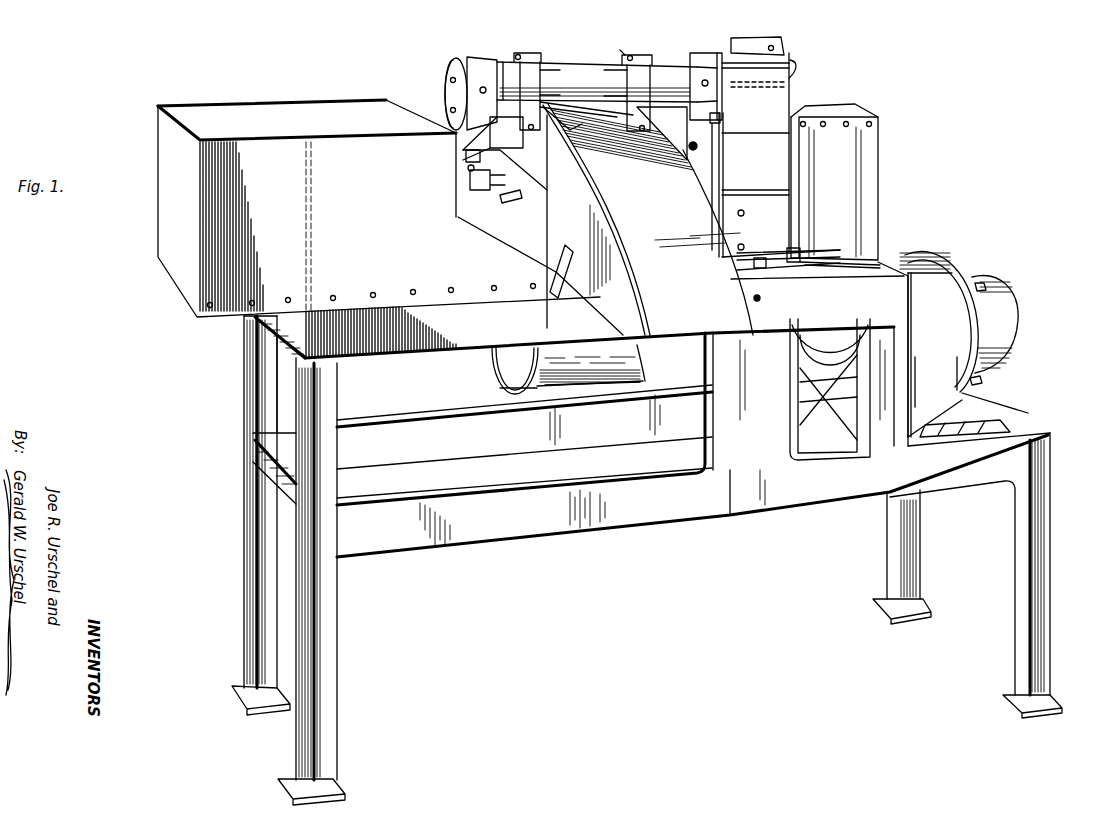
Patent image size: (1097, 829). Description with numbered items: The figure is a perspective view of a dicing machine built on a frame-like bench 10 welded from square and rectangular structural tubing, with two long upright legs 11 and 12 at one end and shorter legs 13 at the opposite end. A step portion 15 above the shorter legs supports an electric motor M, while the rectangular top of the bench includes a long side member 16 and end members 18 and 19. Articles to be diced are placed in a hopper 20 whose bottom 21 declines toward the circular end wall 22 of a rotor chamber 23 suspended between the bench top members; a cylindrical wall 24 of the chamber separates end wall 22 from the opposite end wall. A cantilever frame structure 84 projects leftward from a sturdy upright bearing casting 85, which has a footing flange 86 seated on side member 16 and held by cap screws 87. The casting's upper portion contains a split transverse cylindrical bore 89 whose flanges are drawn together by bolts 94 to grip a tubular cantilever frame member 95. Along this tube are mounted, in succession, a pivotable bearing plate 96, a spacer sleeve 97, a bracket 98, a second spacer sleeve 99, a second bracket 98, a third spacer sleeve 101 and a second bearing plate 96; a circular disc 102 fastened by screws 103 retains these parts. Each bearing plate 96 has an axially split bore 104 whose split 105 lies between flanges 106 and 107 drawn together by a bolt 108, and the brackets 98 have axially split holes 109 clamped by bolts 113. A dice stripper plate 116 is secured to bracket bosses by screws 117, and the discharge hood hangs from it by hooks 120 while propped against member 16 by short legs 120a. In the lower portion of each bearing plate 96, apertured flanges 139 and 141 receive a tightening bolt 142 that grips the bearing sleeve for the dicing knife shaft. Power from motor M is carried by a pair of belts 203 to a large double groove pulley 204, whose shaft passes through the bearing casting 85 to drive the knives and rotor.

The frame-like bench 10 is at (639, 540).
The long upright leg 11 is at (245, 587).
The long upright leg 12 is at (298, 740).
The shorter leg 13 is at (1042, 617).
The step portion 15 is at (1005, 420).
The long side member 16 is at (392, 356).
The end member 18 is at (290, 330).
The end member 19 is at (920, 540).
The hopper 20 is at (172, 142).
The hopper bottom 21 is at (646, 213).
The circular end wall 22 is at (513, 373).
The rotor chamber 23 is at (533, 393).
The cylindrical wall 24 is at (579, 386).
The cantilever frame structure 84 is at (556, 91).
The upright bearing casting 85 is at (841, 166).
The footing flange 86 is at (757, 258).
The cap screws 87 is at (789, 254).
The split transverse cylindrical bore 89 is at (796, 67).
The bolts 94 is at (760, 44).
The tubular cantilever frame member 95 is at (811, 151).
The pivotable bearing plate 96 is at (722, 120).
The spacer sleeve 97 is at (680, 92).
The bracket 98 is at (517, 56).
The second spacer sleeve 99 is at (597, 72).
The third spacer sleeve 101 is at (503, 58).
The circular disc 102 is at (448, 88).
The screws 103 is at (452, 78).
The axially split bore 104 is at (668, 160).
The split 105 is at (694, 55).
The flange 106 is at (718, 53).
The flange 107 is at (696, 75).
The bolt 108 is at (708, 84).
The axially split holes 109 is at (586, 82).
The bolts 113 is at (575, 61).
The dice stripper plate 116 is at (597, 110).
The screws 117 is at (600, 128).
The hooks 120 is at (605, 135).
The short legs 120a is at (556, 278).
The apertured flange 139 is at (470, 180).
The apertured flange 141 is at (500, 198).
The tightening bolt 142 is at (700, 148).
The belts 203 is at (800, 418).
The large diameter double groove pulley 204 is at (800, 400).
The electric motor M is at (945, 339).